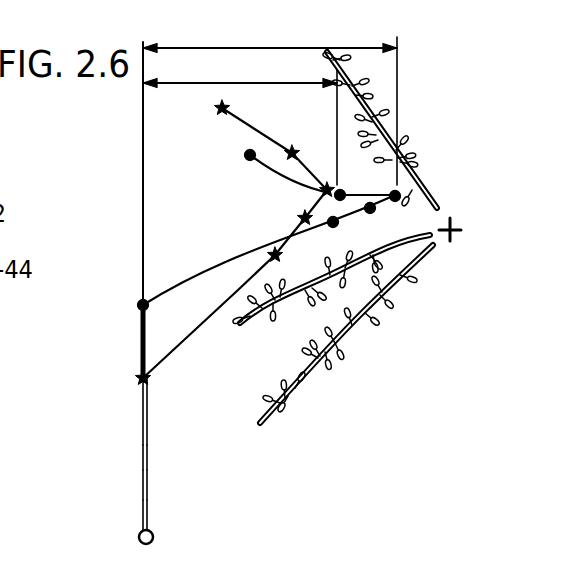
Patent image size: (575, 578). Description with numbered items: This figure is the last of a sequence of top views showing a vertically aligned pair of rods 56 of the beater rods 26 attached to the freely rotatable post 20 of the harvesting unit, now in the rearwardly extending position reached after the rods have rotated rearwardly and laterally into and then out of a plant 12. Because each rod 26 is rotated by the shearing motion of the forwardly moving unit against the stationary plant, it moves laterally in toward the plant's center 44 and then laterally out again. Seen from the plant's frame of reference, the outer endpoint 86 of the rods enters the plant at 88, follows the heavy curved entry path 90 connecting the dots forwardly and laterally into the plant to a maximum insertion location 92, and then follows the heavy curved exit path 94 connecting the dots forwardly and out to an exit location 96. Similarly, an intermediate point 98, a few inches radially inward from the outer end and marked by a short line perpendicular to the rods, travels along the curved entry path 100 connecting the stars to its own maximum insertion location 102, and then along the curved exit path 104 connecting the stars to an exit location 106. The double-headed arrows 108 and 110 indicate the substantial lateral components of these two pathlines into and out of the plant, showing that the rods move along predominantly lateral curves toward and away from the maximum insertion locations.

The plant 12 is at (368, 342).
The post 20 is at (139, 535).
The beater rod 26 is at (143, 490).
The plant's center 44 is at (453, 243).
The pair of rods 56 is at (143, 452).
The outer endpoint 86 is at (143, 318).
The entry point 88 is at (250, 158).
The curved entry path 90 is at (272, 172).
The maximum insertion location 92 is at (397, 204).
The curved exit path 94 is at (237, 256).
The exit location 96 is at (143, 305).
The intermediate point 98 is at (143, 378).
The curved entry path 100 is at (247, 123).
The maximum insertion location 102 is at (326, 184).
The curved exit path 104 is at (197, 338).
The exit location 106 is at (143, 384).
The double-headed arrow 108 is at (272, 47).
The double-headed arrow 110 is at (276, 82).